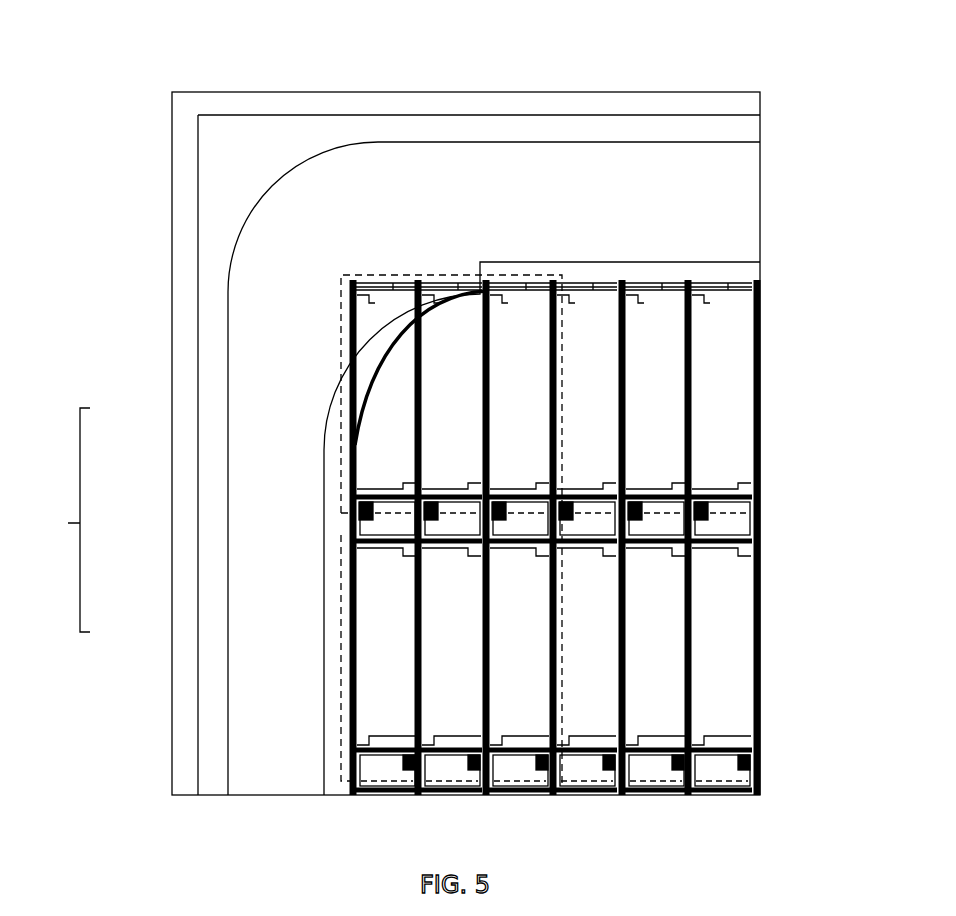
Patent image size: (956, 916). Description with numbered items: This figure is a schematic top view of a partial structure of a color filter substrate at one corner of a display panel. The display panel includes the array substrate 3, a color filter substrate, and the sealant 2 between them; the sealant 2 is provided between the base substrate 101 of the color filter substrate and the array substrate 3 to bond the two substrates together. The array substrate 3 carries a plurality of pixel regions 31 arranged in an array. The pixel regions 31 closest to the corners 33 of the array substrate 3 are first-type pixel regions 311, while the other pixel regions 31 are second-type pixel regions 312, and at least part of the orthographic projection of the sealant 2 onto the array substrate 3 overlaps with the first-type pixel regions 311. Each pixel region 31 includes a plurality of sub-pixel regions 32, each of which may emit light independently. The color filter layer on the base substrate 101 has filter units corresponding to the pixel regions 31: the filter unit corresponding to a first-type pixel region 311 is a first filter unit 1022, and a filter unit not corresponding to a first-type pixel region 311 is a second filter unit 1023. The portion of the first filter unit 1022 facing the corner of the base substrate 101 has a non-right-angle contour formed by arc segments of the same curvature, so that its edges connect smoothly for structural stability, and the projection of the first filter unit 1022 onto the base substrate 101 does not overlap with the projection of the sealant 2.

The sealant 2 is at (632, 193).
The array substrate 3 is at (172, 178).
The corners of the array substrate 33 is at (172, 91).
The base substrate 101 is at (560, 115).
The first filter unit 1022 is at (403, 337).
The second filter unit 1023 is at (760, 365).
The pixel region 31 is at (67, 520).
The first-type pixel region 311 is at (340, 437).
The second-type pixel region 312 is at (340, 633).
The sub-pixel region 32 is at (520, 727).